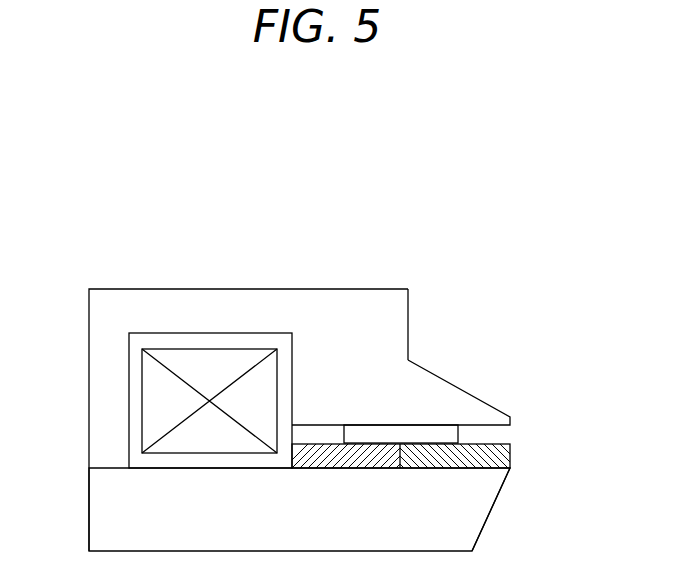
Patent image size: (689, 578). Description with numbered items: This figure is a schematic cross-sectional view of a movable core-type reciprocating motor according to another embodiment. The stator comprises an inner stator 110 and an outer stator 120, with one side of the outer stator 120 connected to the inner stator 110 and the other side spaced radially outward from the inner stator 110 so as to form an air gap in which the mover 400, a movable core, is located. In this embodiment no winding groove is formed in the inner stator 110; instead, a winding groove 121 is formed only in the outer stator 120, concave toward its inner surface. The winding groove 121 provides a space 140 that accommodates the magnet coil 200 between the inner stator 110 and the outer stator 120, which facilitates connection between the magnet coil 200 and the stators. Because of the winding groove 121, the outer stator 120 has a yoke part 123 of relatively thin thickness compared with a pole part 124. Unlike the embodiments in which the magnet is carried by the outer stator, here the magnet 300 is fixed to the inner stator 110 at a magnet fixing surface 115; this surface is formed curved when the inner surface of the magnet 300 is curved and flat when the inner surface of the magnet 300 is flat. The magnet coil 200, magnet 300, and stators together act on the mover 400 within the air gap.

The inner stator 110 is at (465, 523).
The magnet fixing surface 115 is at (470, 470).
The outer stator 120 is at (397, 291).
The winding groove 121 is at (129, 346).
The yoke part 123 is at (285, 307).
The pole part 124 is at (428, 387).
The space 140 is at (272, 341).
The magnet coil 200 is at (197, 358).
The magnet 300 is at (512, 453).
The mover 400 is at (458, 433).